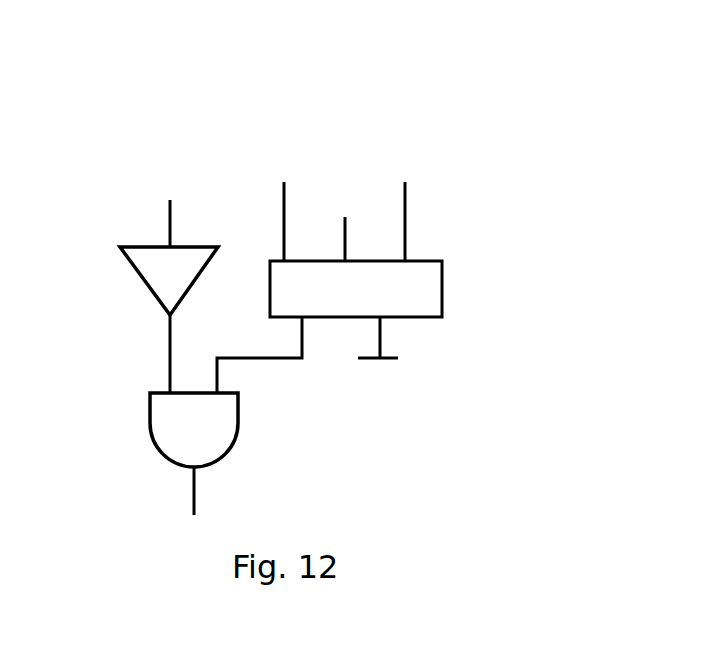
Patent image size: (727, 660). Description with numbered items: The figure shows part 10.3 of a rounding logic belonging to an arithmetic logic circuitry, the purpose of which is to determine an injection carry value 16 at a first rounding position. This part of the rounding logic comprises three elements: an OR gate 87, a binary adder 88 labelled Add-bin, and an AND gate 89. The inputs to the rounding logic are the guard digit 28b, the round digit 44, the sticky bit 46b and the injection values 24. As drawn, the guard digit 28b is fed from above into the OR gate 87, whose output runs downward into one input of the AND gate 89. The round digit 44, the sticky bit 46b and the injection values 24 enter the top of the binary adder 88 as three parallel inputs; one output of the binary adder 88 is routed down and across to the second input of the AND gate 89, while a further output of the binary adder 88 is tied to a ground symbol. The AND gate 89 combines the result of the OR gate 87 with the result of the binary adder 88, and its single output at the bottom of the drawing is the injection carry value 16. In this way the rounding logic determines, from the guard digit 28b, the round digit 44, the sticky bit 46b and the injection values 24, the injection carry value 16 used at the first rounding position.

The part of rounding logic 10.3 is at (522, 94).
The guard digit 28b is at (168, 196).
The OR gate 87 is at (130, 270).
The AND gate 89 is at (148, 420).
The injection carry value 16 is at (192, 521).
The binary adder 88 is at (446, 290).
The round digit 44 is at (281, 180).
The sticky bit 46b is at (343, 215).
The injection values 24 is at (401, 180).